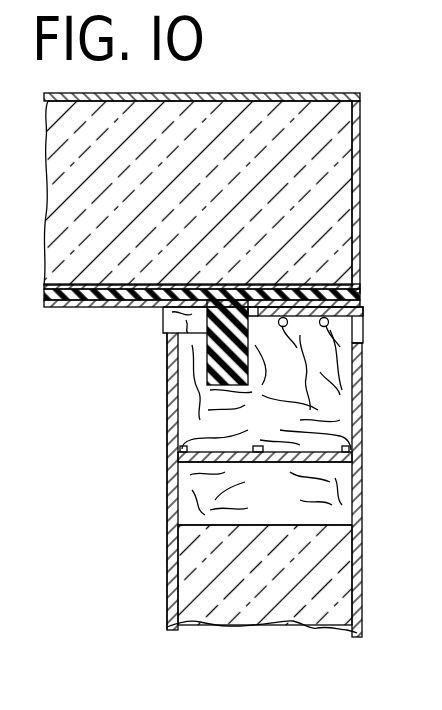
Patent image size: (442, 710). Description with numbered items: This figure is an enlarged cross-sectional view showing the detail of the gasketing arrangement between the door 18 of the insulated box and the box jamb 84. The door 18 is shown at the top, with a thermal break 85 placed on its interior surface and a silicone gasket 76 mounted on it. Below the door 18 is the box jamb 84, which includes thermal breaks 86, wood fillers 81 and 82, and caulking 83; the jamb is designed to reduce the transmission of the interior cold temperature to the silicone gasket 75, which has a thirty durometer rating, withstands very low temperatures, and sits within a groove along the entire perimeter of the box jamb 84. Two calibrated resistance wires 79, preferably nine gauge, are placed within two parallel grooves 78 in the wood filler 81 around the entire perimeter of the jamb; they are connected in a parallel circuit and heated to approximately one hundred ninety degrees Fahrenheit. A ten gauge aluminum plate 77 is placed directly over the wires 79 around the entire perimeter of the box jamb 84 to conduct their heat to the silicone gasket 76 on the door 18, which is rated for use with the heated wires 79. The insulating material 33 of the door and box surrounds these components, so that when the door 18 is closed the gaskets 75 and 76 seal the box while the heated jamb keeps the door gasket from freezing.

The door 18 is at (204, 92).
The insulation block 33 is at (224, 201).
The silicone gasket 75 is at (215, 340).
The silicone gasket 76 is at (312, 294).
The aluminum plate 77 is at (363, 307).
The parallel grooves 78 is at (279, 324).
The calibrated resistance wires 79 is at (383, 362).
The wood filler 81 is at (337, 415).
The wood filler 82 is at (270, 509).
The caulking 83 is at (258, 448).
The box jamb 84 is at (362, 585).
The thermal break 85 is at (147, 306).
The thermal breaks 86 is at (173, 370).